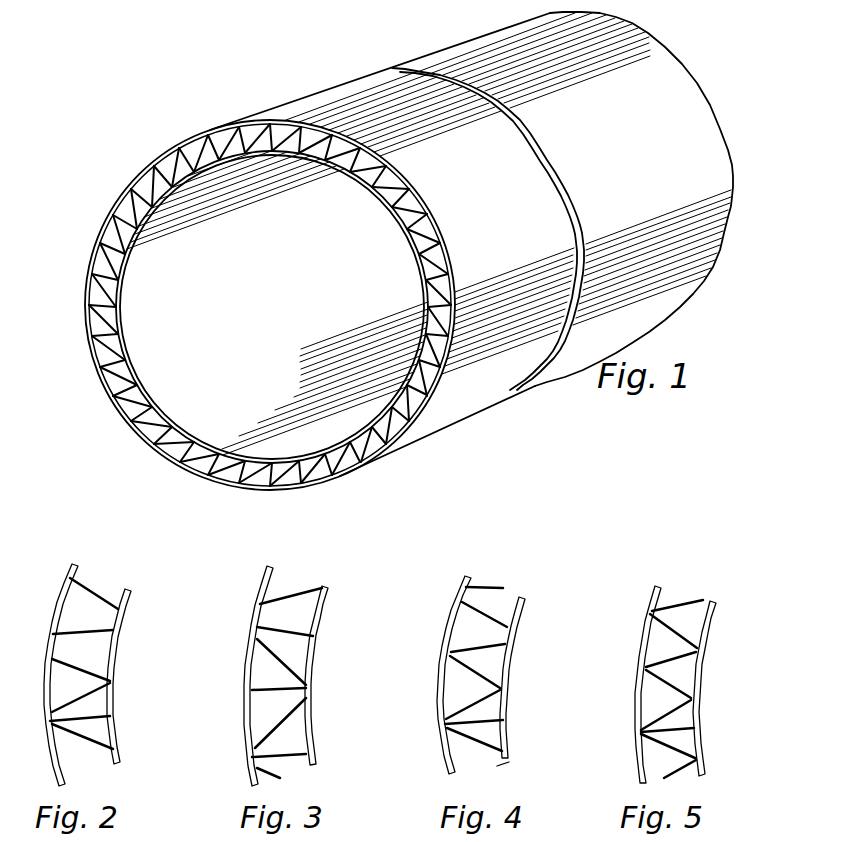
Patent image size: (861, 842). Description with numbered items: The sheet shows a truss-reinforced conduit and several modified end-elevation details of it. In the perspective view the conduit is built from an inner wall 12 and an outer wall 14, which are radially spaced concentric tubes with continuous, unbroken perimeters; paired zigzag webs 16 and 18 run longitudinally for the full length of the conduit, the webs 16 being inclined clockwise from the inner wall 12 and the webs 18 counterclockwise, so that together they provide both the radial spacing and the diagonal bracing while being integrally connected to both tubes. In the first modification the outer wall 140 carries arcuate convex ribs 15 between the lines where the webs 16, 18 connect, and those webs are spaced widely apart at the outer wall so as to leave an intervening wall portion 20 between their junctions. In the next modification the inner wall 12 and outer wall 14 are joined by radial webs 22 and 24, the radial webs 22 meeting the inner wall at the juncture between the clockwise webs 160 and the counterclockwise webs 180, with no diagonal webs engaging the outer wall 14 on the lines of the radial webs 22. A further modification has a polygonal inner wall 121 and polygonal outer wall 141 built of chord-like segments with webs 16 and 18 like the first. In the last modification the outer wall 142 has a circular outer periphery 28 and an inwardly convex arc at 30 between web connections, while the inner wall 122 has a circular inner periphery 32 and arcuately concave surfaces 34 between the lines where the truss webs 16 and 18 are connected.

In FIG. 1, the inner wall 12 is at (119, 301).
In FIG. 2, the inner wall 12 is at (112, 658).
In FIG. 3, the inner wall 12 is at (318, 617).
In FIG. 1, the outer wall 14 is at (84, 287).
In FIG. 3, the outer wall 14 is at (258, 593).
In FIG. 2, the arcuate convex ribs 15 is at (57, 601).
In FIG. 1, the zigzag webs 16 is at (94, 233).
In FIG. 2, the zigzag webs 16 is at (68, 669).
In FIG. 4, the zigzag webs 16 is at (483, 683).
In FIG. 5, the zigzag webs 16 is at (673, 687).
In FIG. 1, the zigzag webs 18 is at (106, 220).
In FIG. 2, the zigzag webs 18 is at (68, 632).
In FIG. 4, the zigzag webs 18 is at (482, 644).
In FIG. 5, the zigzag webs 18 is at (671, 647).
In FIG. 2, the intervening wall portion 20 is at (55, 726).
In FIG. 3, the radial webs 22 is at (258, 697).
In FIG. 3, the radial webs 24 is at (291, 635).
In FIG. 5, the circular outer periphery 28 is at (652, 612).
In FIG. 5, the inwardly convex arc 30 is at (648, 654).
In FIG. 5, the circular inner periphery 32 is at (712, 636).
In FIG. 5, the arcuately concave surfaces 34 is at (688, 732).
In FIG. 4, the inner wall 121 is at (510, 670).
In FIG. 5, the inner wall 122 is at (708, 680).
In FIG. 2, the outer wall 140 is at (48, 734).
In FIG. 4, the outer wall 141 is at (450, 636).
In FIG. 5, the outer wall 142 is at (632, 647).
In FIG. 3, the webs 160 is at (272, 660).
In FIG. 3, the webs 180 is at (287, 600).